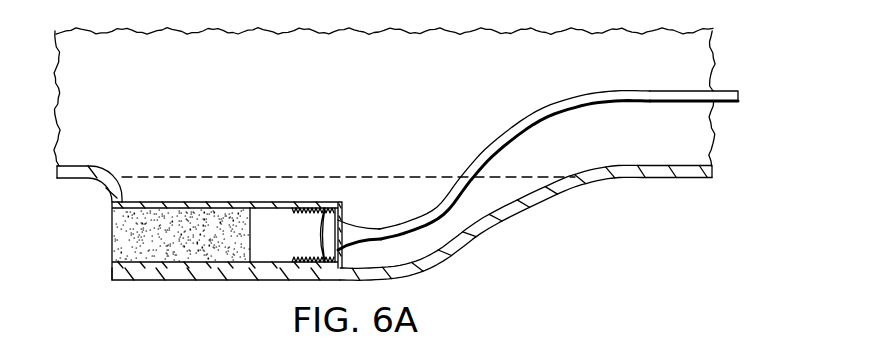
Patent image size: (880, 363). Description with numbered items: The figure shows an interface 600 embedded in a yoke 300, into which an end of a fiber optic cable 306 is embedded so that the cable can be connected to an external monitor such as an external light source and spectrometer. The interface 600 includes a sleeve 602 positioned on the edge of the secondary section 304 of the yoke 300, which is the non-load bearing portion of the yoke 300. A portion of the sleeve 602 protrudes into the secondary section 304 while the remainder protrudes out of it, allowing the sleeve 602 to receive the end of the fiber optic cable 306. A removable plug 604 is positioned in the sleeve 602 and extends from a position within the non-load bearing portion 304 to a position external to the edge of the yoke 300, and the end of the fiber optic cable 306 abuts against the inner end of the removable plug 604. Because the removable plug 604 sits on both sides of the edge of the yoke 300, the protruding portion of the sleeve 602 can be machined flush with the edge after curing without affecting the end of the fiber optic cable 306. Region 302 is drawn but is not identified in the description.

The yoke 300 is at (679, 160).
The overlying region 302 is at (386, 100).
The secondary section 304 is at (486, 206).
The fiber optic cable 306 is at (622, 90).
The interface 600 is at (195, 202).
The sleeve 602 is at (264, 196).
The removable plug 604 is at (112, 236).